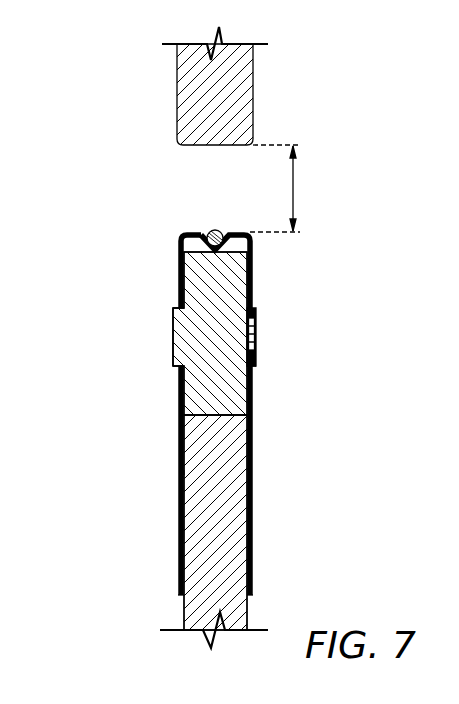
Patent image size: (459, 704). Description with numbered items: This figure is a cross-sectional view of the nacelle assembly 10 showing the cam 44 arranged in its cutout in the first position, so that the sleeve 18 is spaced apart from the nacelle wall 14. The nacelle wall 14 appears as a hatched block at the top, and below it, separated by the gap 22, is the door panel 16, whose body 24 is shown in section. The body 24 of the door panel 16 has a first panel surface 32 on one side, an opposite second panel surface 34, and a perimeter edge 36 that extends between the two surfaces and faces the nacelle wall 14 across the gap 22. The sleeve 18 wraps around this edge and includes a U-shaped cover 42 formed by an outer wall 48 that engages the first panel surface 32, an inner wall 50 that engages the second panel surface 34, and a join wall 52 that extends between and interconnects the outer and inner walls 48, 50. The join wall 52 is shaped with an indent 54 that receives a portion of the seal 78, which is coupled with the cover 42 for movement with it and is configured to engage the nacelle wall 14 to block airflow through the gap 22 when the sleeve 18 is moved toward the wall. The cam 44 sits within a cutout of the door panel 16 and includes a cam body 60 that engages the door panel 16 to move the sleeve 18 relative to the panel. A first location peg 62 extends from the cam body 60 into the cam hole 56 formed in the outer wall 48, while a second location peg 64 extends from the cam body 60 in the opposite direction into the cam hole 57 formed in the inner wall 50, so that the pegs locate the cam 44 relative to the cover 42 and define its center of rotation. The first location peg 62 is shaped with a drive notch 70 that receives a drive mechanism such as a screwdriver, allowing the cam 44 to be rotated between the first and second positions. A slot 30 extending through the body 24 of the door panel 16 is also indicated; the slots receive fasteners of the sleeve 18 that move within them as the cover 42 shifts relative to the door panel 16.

The nacelle assembly 10 is at (108, 92).
The nacelle wall 14 is at (172, 100).
The door panel 16 is at (165, 612).
The sleeve 18 is at (155, 318).
The gap 22 is at (295, 194).
The body 24 is at (193, 622).
The slot 30 is at (212, 432).
The first panel surface 32 is at (250, 620).
The second panel surface 34 is at (180, 600).
The perimeter edge 36 is at (253, 235).
The U-shaped cover 42 is at (150, 470).
The cam 44 is at (118, 375).
The outer wall 48 is at (255, 530).
The inner wall 50 is at (178, 518).
The join wall 52 is at (182, 230).
The indent 54 is at (180, 283).
The cam hole 56 is at (255, 368).
The cam hole 57 is at (173, 368).
The cam body 60 is at (178, 410).
The first location peg 62 is at (275, 322).
The second location peg 64 is at (170, 322).
The drive notch 70 is at (258, 335).
The seal 78 is at (211, 228).